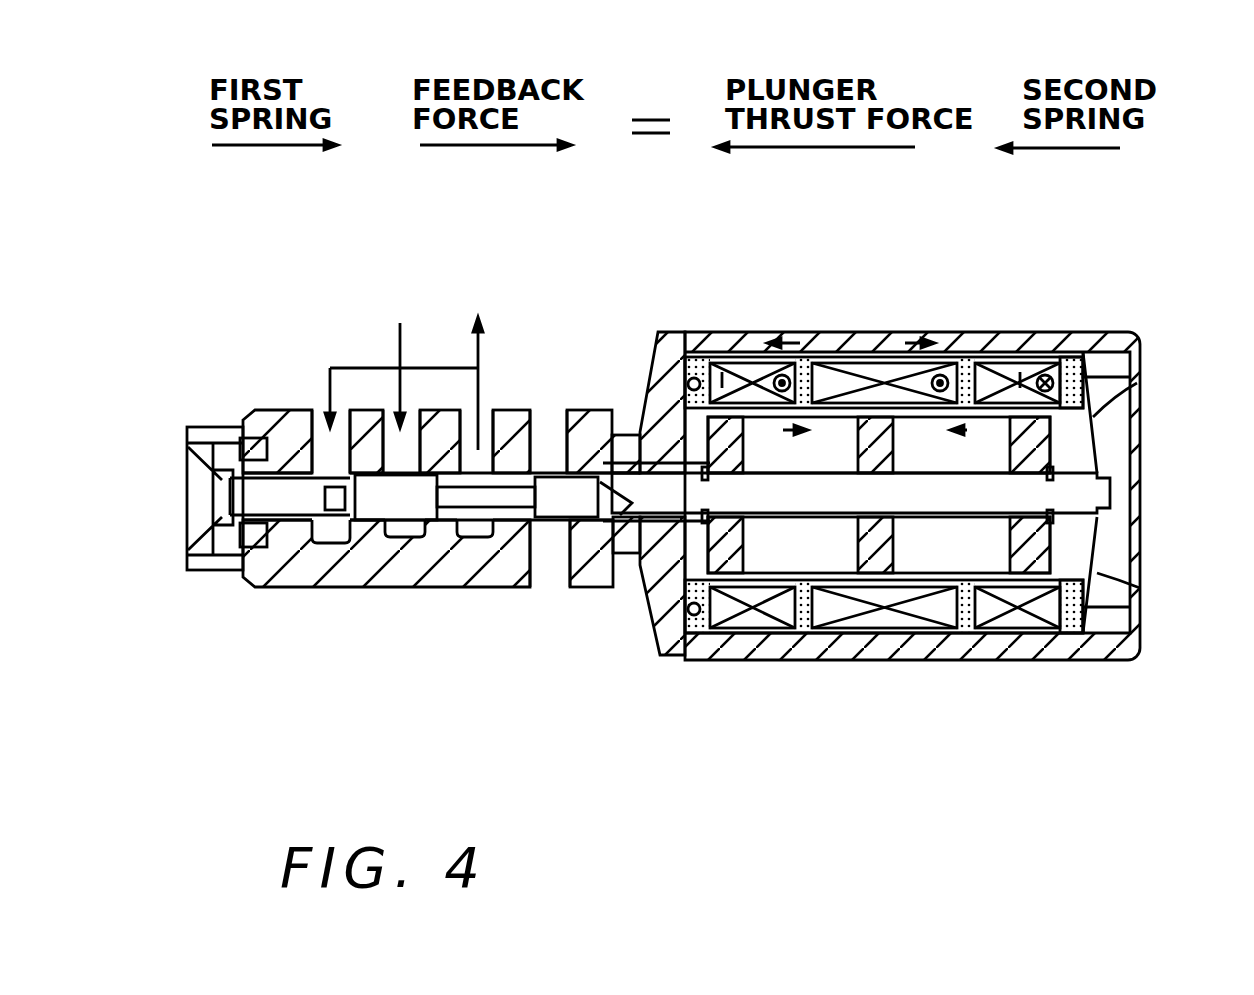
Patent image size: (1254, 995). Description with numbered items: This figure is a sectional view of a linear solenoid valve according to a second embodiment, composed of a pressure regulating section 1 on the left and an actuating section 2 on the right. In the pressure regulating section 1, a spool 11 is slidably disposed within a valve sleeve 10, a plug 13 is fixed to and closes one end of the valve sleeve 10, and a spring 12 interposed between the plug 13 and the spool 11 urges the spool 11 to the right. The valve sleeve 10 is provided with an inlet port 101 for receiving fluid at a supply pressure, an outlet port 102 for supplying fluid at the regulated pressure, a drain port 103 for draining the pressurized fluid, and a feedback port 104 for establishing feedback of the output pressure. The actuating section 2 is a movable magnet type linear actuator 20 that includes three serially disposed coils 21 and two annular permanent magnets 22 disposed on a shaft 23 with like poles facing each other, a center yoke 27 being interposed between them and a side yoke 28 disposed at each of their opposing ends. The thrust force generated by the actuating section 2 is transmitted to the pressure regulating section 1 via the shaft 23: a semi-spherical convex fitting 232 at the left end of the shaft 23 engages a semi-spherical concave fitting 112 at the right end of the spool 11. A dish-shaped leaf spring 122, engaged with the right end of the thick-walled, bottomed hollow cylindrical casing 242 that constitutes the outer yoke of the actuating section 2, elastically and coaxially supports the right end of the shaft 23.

The pressure regulating section 1 is at (467, 271).
The actuating section 2 is at (1000, 313).
The valve sleeve 10 is at (418, 545).
The spool 11 is at (632, 505).
The spring 12 is at (310, 545).
The plug 13 is at (213, 530).
The movable magnet type linear actuator 20 is at (977, 667).
The coils 21 is at (987, 387).
The permanent magnets 22 is at (837, 543).
The shaft 23 is at (817, 490).
The center yoke 27 is at (1108, 478).
The side yoke 28 is at (1077, 700).
The inlet port 101 is at (398, 424).
The outlet port 102 is at (480, 450).
The drain port 103 is at (545, 565).
The feedback port 104 is at (328, 424).
The semi-spherical concave fitting 112 is at (598, 480).
The leaf spring 122 is at (1100, 576).
The semi-spherical convex fitting 232 is at (590, 512).
The hollow cylindrical casing 242 is at (1080, 375).